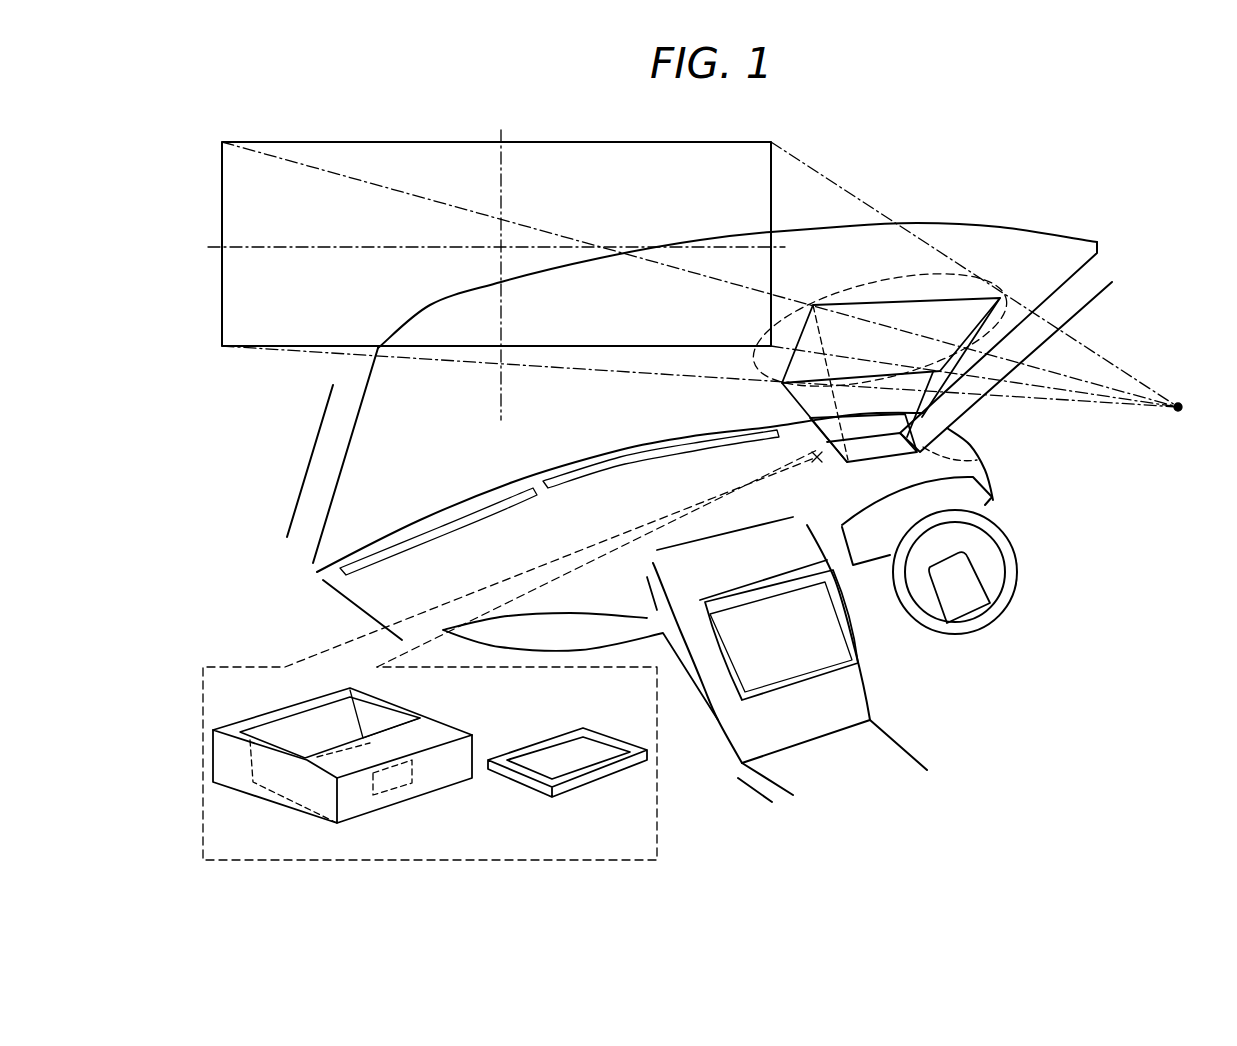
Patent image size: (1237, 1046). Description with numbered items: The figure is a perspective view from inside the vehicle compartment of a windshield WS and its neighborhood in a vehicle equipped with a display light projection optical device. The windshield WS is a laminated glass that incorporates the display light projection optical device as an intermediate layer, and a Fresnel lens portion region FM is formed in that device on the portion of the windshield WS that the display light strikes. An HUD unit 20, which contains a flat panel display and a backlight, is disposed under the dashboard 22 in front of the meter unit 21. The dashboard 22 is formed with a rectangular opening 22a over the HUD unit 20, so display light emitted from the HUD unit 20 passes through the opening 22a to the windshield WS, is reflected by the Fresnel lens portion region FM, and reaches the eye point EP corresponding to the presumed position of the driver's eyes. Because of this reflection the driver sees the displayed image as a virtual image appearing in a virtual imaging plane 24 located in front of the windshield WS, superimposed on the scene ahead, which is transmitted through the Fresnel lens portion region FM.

The HUD unit 20 is at (450, 722).
The meter unit 21 is at (870, 545).
The dashboard 22 is at (637, 493).
The opening 22a is at (935, 462).
The virtual imaging plane 24 is at (545, 142).
The windshield WS is at (918, 223).
The Fresnel lens portion region FM is at (933, 276).
The eye point EP is at (718, 276).